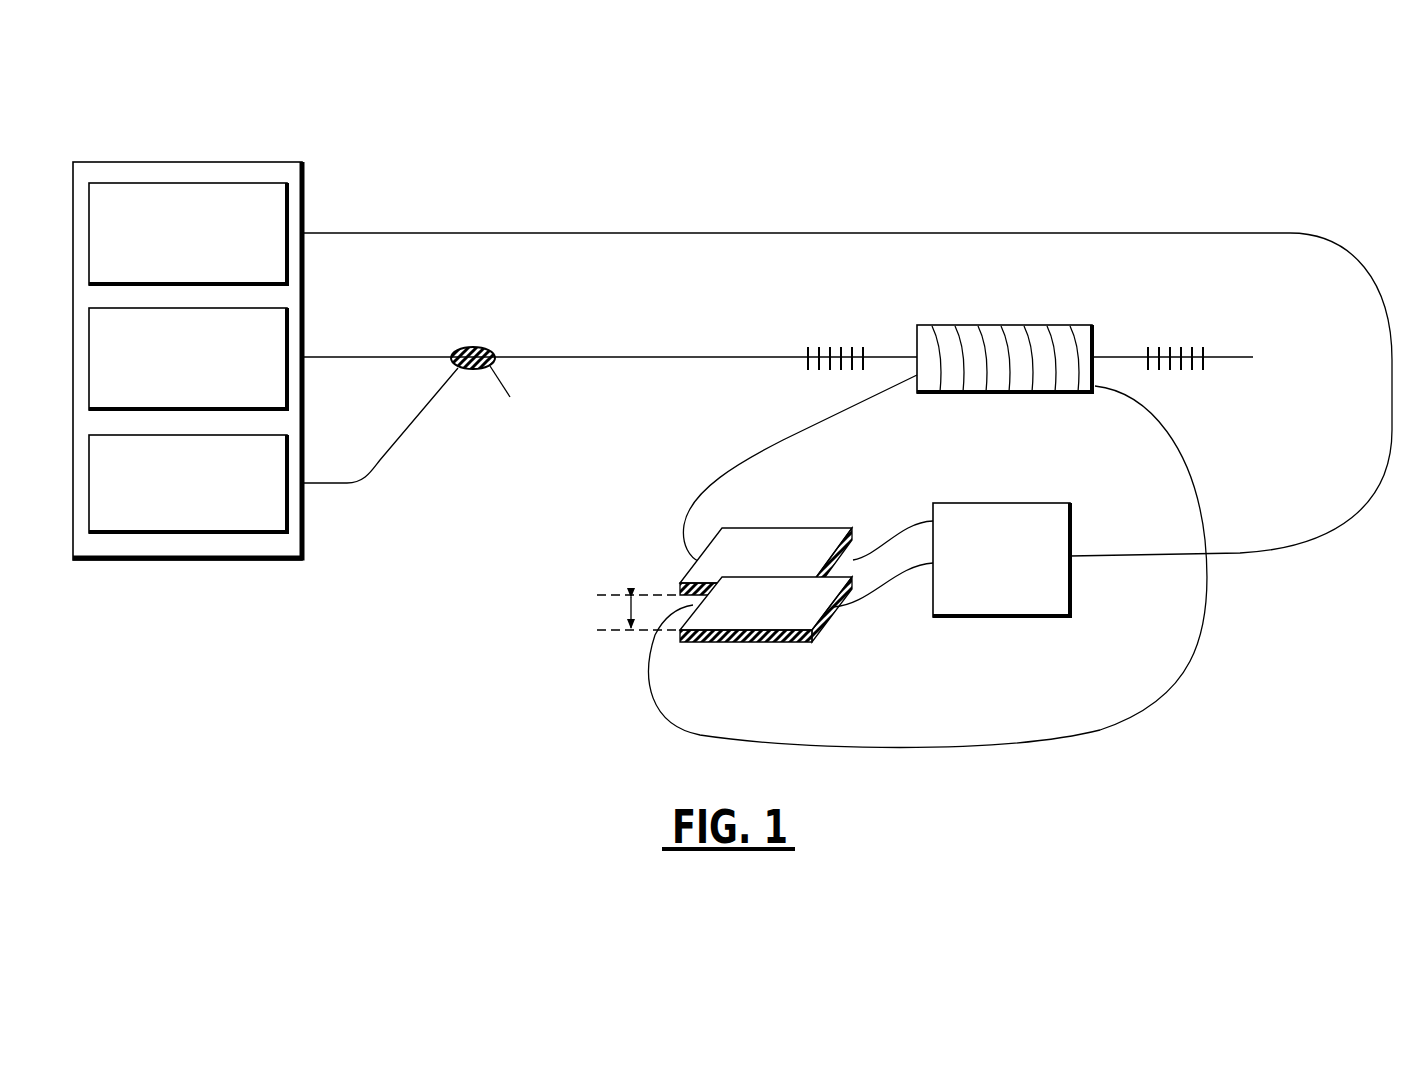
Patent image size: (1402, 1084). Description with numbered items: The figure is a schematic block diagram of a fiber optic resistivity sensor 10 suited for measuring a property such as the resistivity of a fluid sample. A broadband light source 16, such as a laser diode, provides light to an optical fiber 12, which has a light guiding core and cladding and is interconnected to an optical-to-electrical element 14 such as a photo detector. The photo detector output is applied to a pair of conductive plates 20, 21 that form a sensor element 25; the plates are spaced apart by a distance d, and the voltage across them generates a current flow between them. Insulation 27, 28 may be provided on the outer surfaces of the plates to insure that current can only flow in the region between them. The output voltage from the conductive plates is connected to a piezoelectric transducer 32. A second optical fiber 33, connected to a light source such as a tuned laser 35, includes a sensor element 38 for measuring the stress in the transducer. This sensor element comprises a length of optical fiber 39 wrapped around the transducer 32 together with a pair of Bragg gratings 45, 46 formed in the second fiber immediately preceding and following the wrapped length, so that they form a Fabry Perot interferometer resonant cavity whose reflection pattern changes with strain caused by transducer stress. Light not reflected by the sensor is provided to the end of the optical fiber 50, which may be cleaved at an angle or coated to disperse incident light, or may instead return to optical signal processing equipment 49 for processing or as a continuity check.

The fiber optic resistivity sensor 10 is at (866, 177).
The optical fiber 12 is at (456, 233).
The optical-to-electrical element 14 is at (1008, 503).
The broadband light source 16 is at (224, 183).
The conductive plate 20 is at (853, 540).
The conductive plate 21 is at (795, 620).
The sensor element 25 is at (768, 572).
The insulation 27 is at (680, 583).
The insulation 28 is at (757, 645).
The piezoelectric transducer 32 is at (917, 338).
The second optical fiber 33 is at (408, 357).
The tuned laser 35 is at (302, 318).
The sensor element 38 is at (1009, 321).
The length of optical fiber 39 is at (980, 345).
The Bragg grating 45 is at (824, 345).
The Bragg grating 46 is at (1165, 345).
The optical signal processing equipment 49 is at (205, 535).
The end of the optical fiber 50 is at (1253, 357).